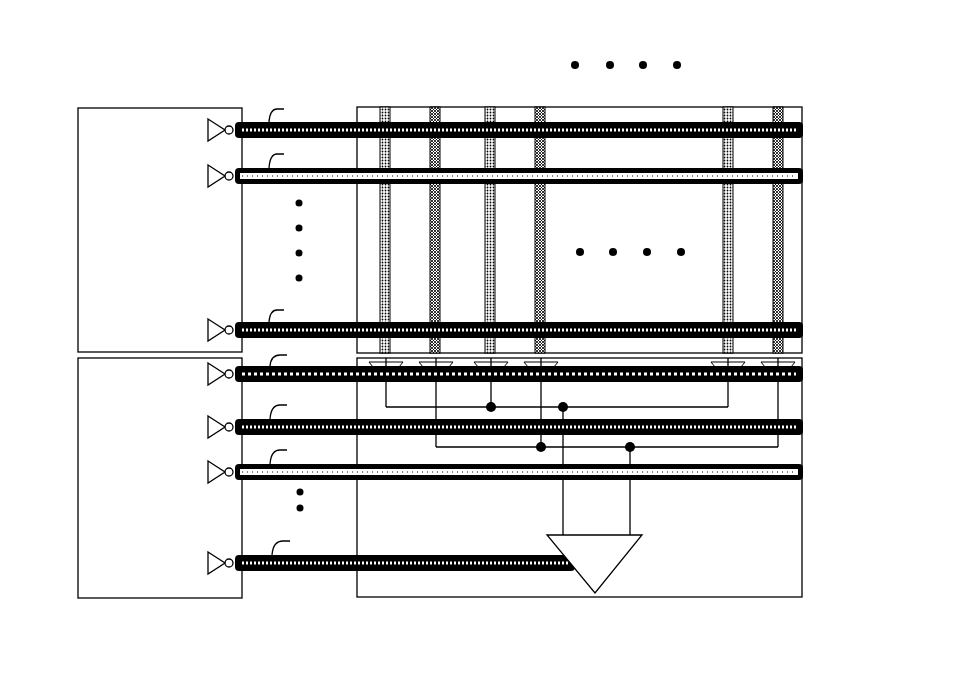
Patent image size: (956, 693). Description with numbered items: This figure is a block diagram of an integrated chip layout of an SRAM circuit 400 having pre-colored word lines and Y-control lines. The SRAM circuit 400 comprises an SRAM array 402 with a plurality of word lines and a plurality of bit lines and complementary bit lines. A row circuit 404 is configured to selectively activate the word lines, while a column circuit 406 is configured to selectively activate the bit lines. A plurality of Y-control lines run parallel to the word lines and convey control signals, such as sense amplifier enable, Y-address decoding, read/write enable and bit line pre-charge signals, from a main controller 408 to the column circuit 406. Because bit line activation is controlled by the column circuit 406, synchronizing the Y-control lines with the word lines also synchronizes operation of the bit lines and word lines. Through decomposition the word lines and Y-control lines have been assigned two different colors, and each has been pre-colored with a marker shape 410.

The SRAM circuit 400 is at (82, 38).
The SRAM array 402 is at (802, 240).
The row circuit 404 is at (139, 255).
The column circuit 406 is at (765, 598).
The main controller 408 is at (139, 545).
The marker shape 410 is at (801, 121).